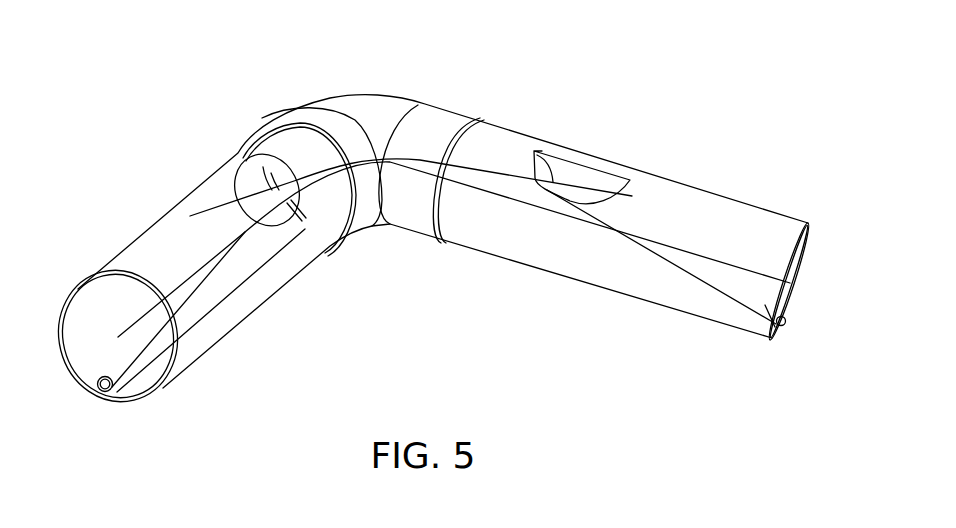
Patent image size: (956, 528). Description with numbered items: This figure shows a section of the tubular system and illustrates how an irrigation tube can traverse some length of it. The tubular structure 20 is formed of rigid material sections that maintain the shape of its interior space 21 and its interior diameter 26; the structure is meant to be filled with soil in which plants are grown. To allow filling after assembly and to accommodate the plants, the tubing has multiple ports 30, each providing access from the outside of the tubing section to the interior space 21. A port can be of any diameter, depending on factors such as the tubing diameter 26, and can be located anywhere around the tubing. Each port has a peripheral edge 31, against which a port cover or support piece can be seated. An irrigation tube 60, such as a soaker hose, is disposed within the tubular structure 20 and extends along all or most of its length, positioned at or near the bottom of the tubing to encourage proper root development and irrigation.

The tubular structure 20 is at (505, 99).
The interior space 21 is at (90, 324).
The interior diameter 26 is at (805, 232).
The port 30 is at (222, 182).
The peripheral edge of a port 31 is at (252, 158).
The irrigation tube 60 is at (124, 360).